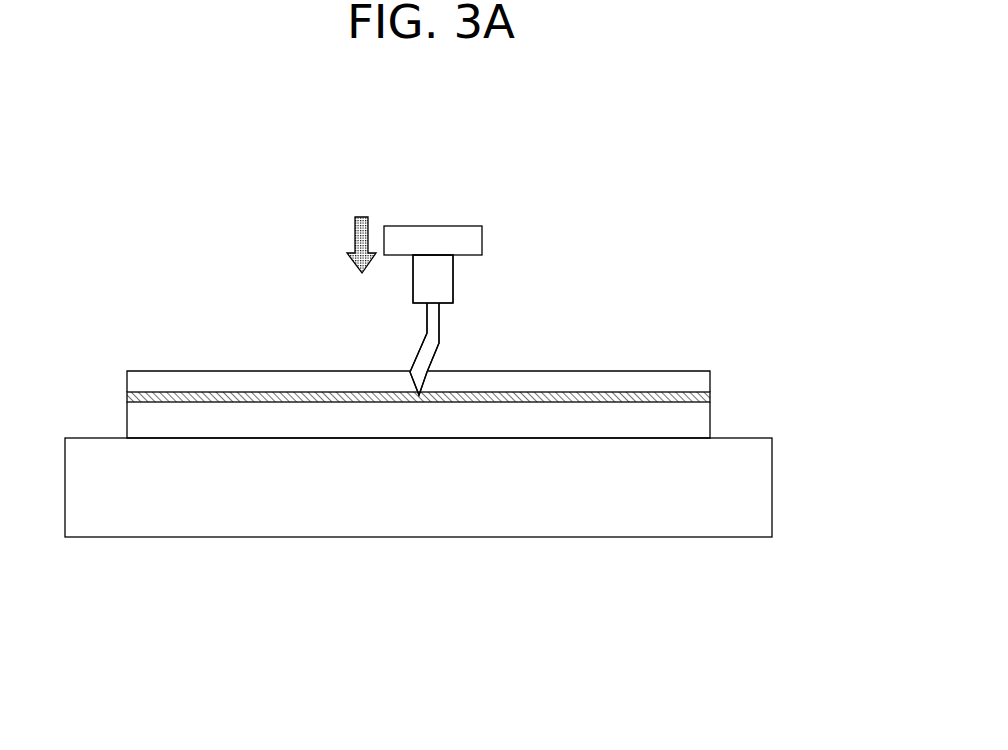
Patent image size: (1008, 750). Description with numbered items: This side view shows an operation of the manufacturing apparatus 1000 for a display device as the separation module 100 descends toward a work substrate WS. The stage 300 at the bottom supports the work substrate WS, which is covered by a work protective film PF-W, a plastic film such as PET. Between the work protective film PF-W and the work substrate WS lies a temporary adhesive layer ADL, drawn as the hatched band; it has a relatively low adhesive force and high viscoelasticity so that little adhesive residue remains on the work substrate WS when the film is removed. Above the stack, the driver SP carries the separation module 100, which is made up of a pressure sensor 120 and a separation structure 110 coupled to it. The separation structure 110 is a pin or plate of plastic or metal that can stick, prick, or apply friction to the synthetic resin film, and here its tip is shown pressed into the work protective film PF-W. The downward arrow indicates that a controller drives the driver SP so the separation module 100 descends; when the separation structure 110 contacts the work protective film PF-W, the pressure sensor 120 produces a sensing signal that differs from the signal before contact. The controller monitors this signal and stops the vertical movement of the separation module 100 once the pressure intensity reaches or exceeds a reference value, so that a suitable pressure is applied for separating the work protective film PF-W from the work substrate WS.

The manufacturing apparatus 1000 is at (463, 210).
The driver SP is at (473, 238).
The separation module 100 is at (547, 263).
The pressure sensor 120 is at (443, 277).
The separation structure 110 is at (430, 330).
The work protective film PF-W is at (702, 380).
The adhesive layer ADL is at (702, 395).
The work substrate WS is at (702, 423).
The stage 300 is at (758, 487).